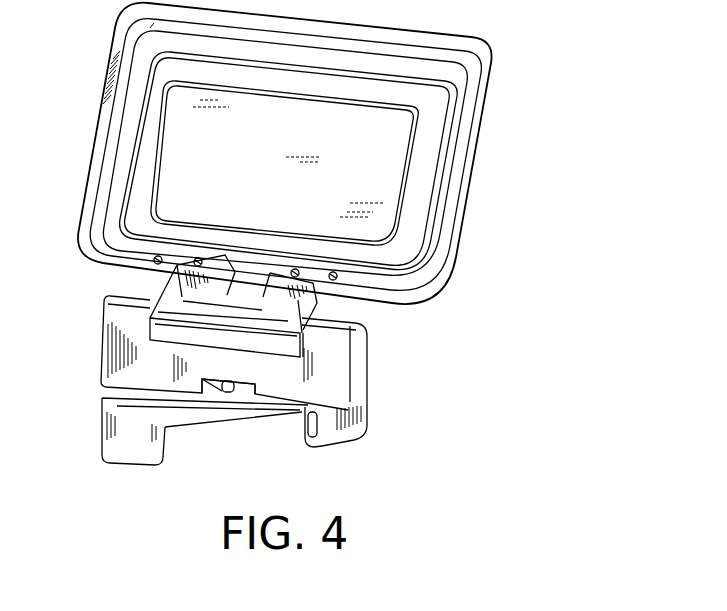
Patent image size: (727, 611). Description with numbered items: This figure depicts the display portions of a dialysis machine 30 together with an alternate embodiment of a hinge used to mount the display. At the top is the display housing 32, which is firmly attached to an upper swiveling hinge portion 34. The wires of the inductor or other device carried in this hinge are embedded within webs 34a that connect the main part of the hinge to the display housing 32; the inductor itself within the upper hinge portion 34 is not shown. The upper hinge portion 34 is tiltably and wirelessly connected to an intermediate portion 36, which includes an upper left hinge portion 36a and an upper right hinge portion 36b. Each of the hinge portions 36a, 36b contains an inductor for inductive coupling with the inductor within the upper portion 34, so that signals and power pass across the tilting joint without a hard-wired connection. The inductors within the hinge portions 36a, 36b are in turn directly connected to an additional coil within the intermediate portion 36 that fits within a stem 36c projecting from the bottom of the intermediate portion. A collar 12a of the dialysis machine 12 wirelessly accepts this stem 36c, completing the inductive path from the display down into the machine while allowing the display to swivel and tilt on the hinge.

The dialysis machine 30 is at (591, 114).
The display housing 32 is at (474, 152).
The upper swiveling hinge portion 34 is at (358, 325).
The webs 34a is at (160, 282).
The intermediate portion 36 is at (234, 384).
The upper left hinge portion 36a is at (110, 302).
The upper right hinge portion 36b is at (326, 385).
The stem 36c is at (237, 391).
The dialysis machine 12 is at (343, 437).
The collar 12a is at (227, 407).